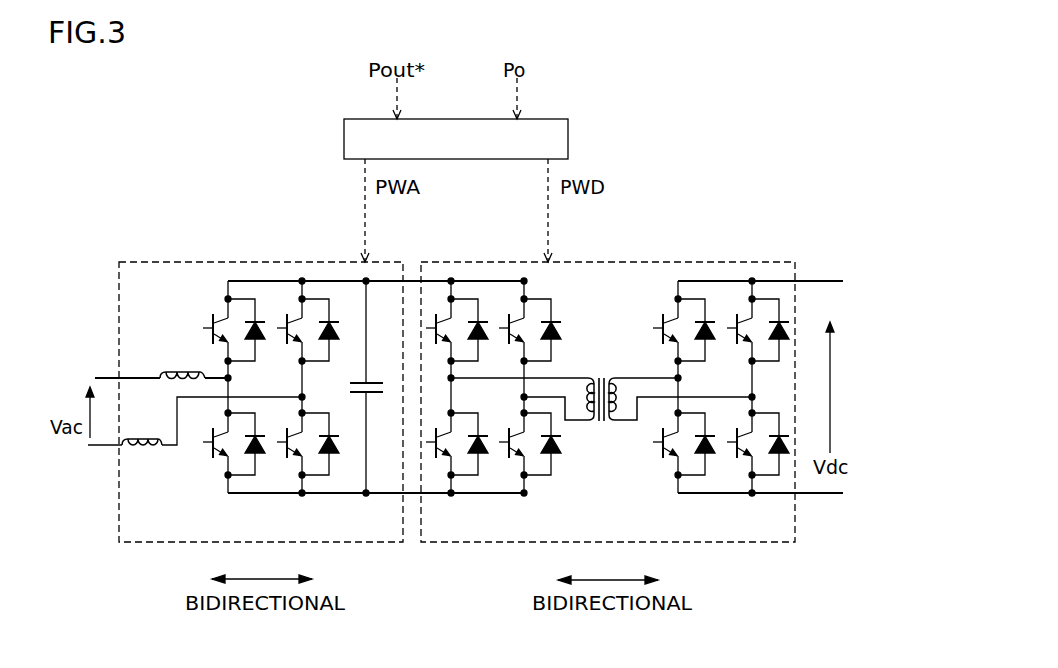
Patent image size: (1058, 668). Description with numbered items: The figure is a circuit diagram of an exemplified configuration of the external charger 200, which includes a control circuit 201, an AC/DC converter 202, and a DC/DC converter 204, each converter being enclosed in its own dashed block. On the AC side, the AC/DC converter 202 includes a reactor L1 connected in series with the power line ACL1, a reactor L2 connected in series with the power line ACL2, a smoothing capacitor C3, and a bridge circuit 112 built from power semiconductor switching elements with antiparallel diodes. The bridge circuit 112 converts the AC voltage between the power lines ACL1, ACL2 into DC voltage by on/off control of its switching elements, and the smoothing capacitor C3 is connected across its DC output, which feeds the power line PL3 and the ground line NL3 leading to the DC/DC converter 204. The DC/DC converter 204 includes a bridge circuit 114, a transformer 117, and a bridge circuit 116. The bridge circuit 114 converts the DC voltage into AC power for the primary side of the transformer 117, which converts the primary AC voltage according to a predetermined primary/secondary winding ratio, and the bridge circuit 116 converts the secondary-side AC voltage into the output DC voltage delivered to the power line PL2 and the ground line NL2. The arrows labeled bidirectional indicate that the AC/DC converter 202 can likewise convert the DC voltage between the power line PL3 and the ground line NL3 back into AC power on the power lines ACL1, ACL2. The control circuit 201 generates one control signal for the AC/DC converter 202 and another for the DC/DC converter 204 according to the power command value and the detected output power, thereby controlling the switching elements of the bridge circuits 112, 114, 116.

The external charger 200 is at (732, 143).
The control circuit 201 is at (543, 119).
The AC/DC converter 202 is at (261, 262).
The DC/DC converter 204 is at (622, 262).
The bridge circuit 112 is at (307, 503).
The bridge circuit 114 is at (527, 503).
The bridge circuit 116 is at (757, 503).
The transformer 117 is at (604, 441).
The smoothing capacitor C3 is at (373, 380).
The reactor L1 is at (167, 371).
The reactor L2 is at (157, 450).
The power line PL3 is at (411, 281).
The ground line NL3 is at (411, 281).
The power line PL2 is at (805, 281).
The ground line NL2 is at (806, 493).
The power line ACL1 is at (105, 378).
The power line ACL2 is at (105, 445).